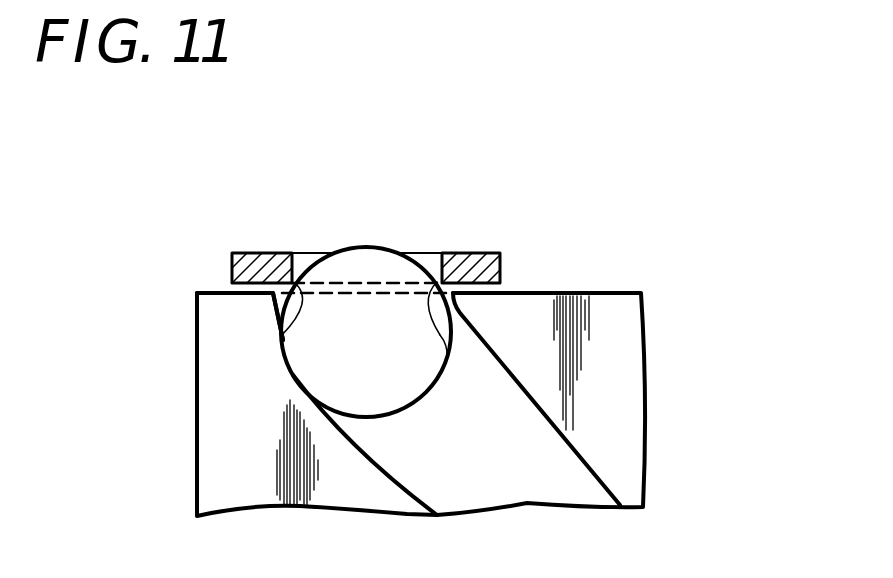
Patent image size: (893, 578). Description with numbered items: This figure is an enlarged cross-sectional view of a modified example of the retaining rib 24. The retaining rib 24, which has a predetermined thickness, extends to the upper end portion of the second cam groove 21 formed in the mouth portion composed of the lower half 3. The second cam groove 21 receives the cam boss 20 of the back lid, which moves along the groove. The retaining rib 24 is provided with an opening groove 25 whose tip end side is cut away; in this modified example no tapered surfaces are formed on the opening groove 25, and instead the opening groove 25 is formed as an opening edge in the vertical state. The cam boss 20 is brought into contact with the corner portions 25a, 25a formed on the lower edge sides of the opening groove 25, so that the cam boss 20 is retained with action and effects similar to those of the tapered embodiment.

The lower half 3 is at (610, 332).
The cam boss 20 is at (388, 318).
The second cam groove 21 is at (565, 428).
The retaining rib 24 is at (257, 252).
The opening groove 25 is at (296, 283).
The corner portion 25a is at (281, 337).